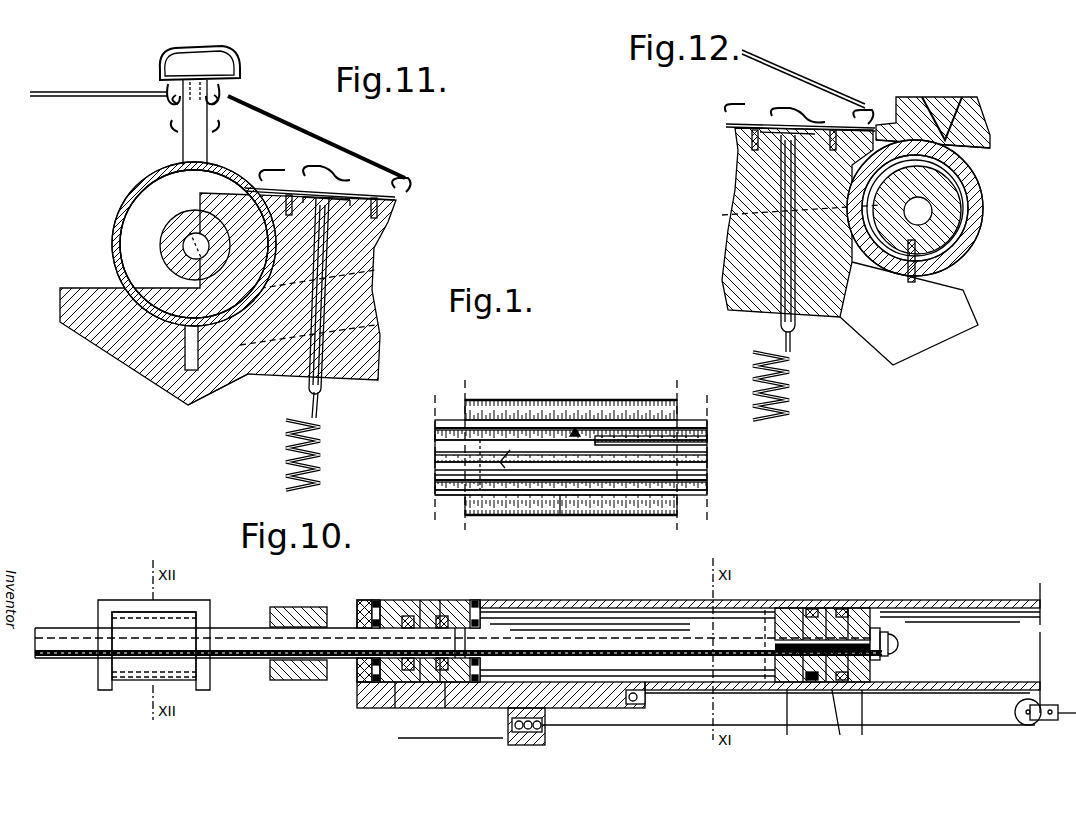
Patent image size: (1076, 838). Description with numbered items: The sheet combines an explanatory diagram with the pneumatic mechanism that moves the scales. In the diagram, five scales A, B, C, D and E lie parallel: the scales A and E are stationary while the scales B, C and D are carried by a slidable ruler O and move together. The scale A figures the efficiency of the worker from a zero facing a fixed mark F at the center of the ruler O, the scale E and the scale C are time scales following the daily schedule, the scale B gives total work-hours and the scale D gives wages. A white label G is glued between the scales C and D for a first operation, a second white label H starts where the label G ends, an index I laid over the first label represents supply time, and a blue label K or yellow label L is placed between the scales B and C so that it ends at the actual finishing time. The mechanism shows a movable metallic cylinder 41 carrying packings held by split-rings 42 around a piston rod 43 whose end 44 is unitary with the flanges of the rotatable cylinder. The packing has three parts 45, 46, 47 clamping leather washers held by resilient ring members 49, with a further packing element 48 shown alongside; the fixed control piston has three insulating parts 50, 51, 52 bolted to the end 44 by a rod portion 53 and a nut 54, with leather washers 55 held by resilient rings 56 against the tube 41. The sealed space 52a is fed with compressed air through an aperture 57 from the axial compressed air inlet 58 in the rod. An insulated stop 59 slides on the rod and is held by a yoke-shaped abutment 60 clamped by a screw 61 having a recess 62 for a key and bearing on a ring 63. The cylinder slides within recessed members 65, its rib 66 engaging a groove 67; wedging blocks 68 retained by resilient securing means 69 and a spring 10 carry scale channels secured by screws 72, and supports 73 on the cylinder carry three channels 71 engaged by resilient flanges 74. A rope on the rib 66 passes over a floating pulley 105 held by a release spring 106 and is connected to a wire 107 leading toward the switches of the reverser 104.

In FIG. 11, the spring 10 is at (326, 440).
In FIG. 12, the spring 10 is at (800, 402).
In FIG. 11, the movable metallic cylinder 41 is at (134, 186).
In FIG. 10, the movable metallic cylinder 41 is at (952, 603).
In FIG. 10, the split-rings 42 is at (376, 600).
In FIG. 11, the piston rod 43 is at (190, 222).
In FIG. 12, the piston rod 43 is at (948, 206).
In FIG. 10, the piston rod 43 is at (336, 628).
In FIG. 10, the end of the piston rod 44 is at (52, 631).
In FIG. 10, the packing part 45 is at (456, 602).
In FIG. 10, the packing part 46 is at (427, 602).
In FIG. 10, the packing part 47 is at (393, 600).
In FIG. 10, the housing wall 48 is at (445, 708).
In FIG. 10, the resilient ring members 49 is at (396, 708).
In FIG. 10, the piston part 50 is at (867, 721).
In FIG. 10, the piston part 51 is at (839, 721).
In FIG. 10, the piston part 52 is at (785, 721).
In FIG. 11, the space 52a is at (136, 212).
In FIG. 10, the space 52a is at (652, 612).
In FIG. 10, the piston rod 53 is at (876, 660).
In FIG. 10, the nut 54 is at (856, 632).
In FIG. 10, the leather washers 55 is at (808, 682).
In FIG. 10, the resilient rings 56 is at (806, 608).
In FIG. 11, the aperture 57 is at (199, 280).
In FIG. 10, the aperture 57 is at (765, 690).
In FIG. 11, the axial compressed air inlet 58 is at (190, 262).
In FIG. 12, the axial compressed air inlet 58 is at (905, 262).
In FIG. 10, the axial compressed air inlet 58 is at (85, 652).
In FIG. 10, the insulated stop 59 is at (280, 607).
In FIG. 12, the yoke-shaped abutment 60 is at (966, 284).
In FIG. 10, the yoke-shaped abutment 60 is at (184, 602).
In FIG. 12, the screw 61 is at (980, 118).
In FIG. 12, the recess 62 is at (942, 104).
In FIG. 12, the ring 63 is at (976, 182).
In FIG. 11, the recessed members 65 is at (72, 316).
In FIG. 12, the recessed members 65 is at (978, 236).
In FIG. 11, the rib 66 is at (185, 374).
In FIG. 10, the rib 66 is at (357, 704).
In FIG. 11, the groove 67 is at (199, 370).
In FIG. 11, the wedging blocks 68 is at (307, 288).
In FIG. 12, the wedging blocks 68 is at (824, 318).
In FIG. 10, the wedging blocks 68 is at (524, 745).
In FIG. 11, the resilient securing means 69 is at (322, 394).
In FIG. 12, the resilient securing means 69 is at (797, 336).
In FIG. 11, the channels 71 is at (200, 68).
In FIG. 12, the channels 71 is at (806, 106).
In FIG. 11, the screws 72 is at (178, 103).
In FIG. 12, the screws 72 is at (757, 112).
In FIG. 11, the supports 73 is at (212, 130).
In FIG. 11, the flanges 74 is at (98, 92).
In FIG. 12, the flanges 74 is at (792, 73).
In FIG. 10, the reverser 104 is at (975, 700).
In FIG. 10, the floating pulley 105 is at (1036, 702).
In FIG. 10, the release spring 106 is at (1070, 716).
In FIG. 10, the wire 107 is at (430, 740).
In FIG. 1, the scale A is at (577, 398).
In FIG. 1, the scale B is at (435, 424).
In FIG. 1, the scale C is at (708, 466).
In FIG. 1, the scale D is at (708, 487).
In FIG. 1, the scale E is at (535, 505).
In FIG. 1, the fixed mark F is at (573, 428).
In FIG. 1, the white label G is at (465, 487).
In FIG. 1, the second white label H is at (562, 490).
In FIG. 1, the index I is at (492, 452).
In FIG. 1, the blue label K is at (537, 452).
In FIG. 1, the yellow label L is at (682, 425).
In FIG. 1, the slidable ruler O is at (714, 446).